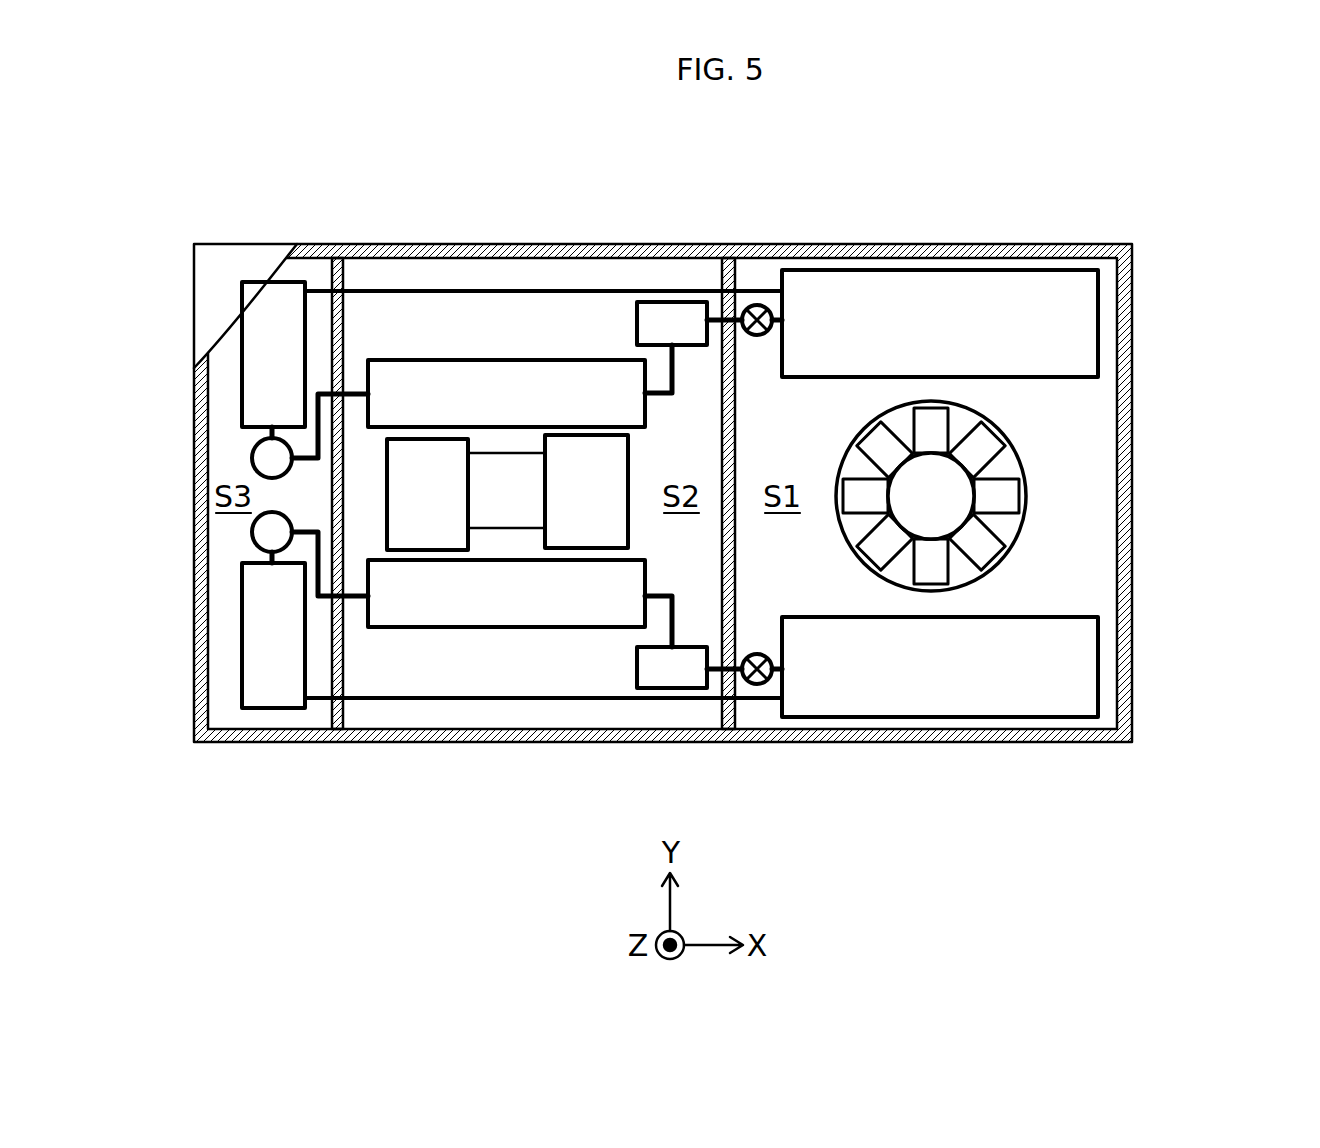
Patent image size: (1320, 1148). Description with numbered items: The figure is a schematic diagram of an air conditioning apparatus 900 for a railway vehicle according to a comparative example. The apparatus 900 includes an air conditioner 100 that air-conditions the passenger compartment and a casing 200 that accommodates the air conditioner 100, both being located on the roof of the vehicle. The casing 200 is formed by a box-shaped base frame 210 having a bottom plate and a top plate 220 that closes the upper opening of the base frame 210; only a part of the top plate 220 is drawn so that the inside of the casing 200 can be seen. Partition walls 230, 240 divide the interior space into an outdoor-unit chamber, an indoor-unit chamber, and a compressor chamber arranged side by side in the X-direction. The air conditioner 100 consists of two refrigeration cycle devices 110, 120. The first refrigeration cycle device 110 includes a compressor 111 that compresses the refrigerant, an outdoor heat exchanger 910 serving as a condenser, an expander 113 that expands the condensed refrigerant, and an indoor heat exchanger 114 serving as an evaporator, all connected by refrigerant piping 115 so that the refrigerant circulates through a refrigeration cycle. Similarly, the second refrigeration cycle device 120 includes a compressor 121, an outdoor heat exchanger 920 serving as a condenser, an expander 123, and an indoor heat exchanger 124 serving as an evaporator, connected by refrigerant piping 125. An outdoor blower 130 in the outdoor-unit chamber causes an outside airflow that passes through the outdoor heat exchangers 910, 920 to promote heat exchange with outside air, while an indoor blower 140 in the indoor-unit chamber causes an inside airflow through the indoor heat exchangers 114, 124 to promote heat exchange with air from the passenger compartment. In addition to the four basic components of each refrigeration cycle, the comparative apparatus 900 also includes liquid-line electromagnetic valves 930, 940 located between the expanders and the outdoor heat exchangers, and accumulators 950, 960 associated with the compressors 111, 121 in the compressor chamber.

The air conditioner 100 is at (1024, 493).
The refrigeration cycle device 110 is at (991, 378).
The refrigeration cycle device 120 is at (991, 614).
The compressor 111 is at (249, 376).
The expander 113 is at (650, 340).
The indoor heat exchanger 114 is at (484, 410).
The refrigerant piping 115 is at (507, 293).
The compressor 121 is at (249, 654).
The expander 123 is at (650, 685).
The indoor heat exchanger 124 is at (484, 613).
The refrigerant piping 125 is at (507, 696).
The outdoor blower 130 is at (907, 512).
The indoor blower 140 is at (484, 508).
The casing 200 is at (663, 445).
The base frame 210 is at (663, 465).
The top plate 220 is at (257, 291).
The partition wall 230 is at (723, 718).
The partition wall 240 is at (329, 712).
The air conditioning apparatus 900 is at (651, 198).
The outdoor heat exchanger 910 is at (907, 340).
The outdoor heat exchanger 920 is at (907, 684).
The liquid-line electromagnetic valve 930 is at (757, 304).
The liquid-line electromagnetic valve 940 is at (757, 685).
The accumulator 950 is at (252, 458).
The accumulator 960 is at (252, 532).